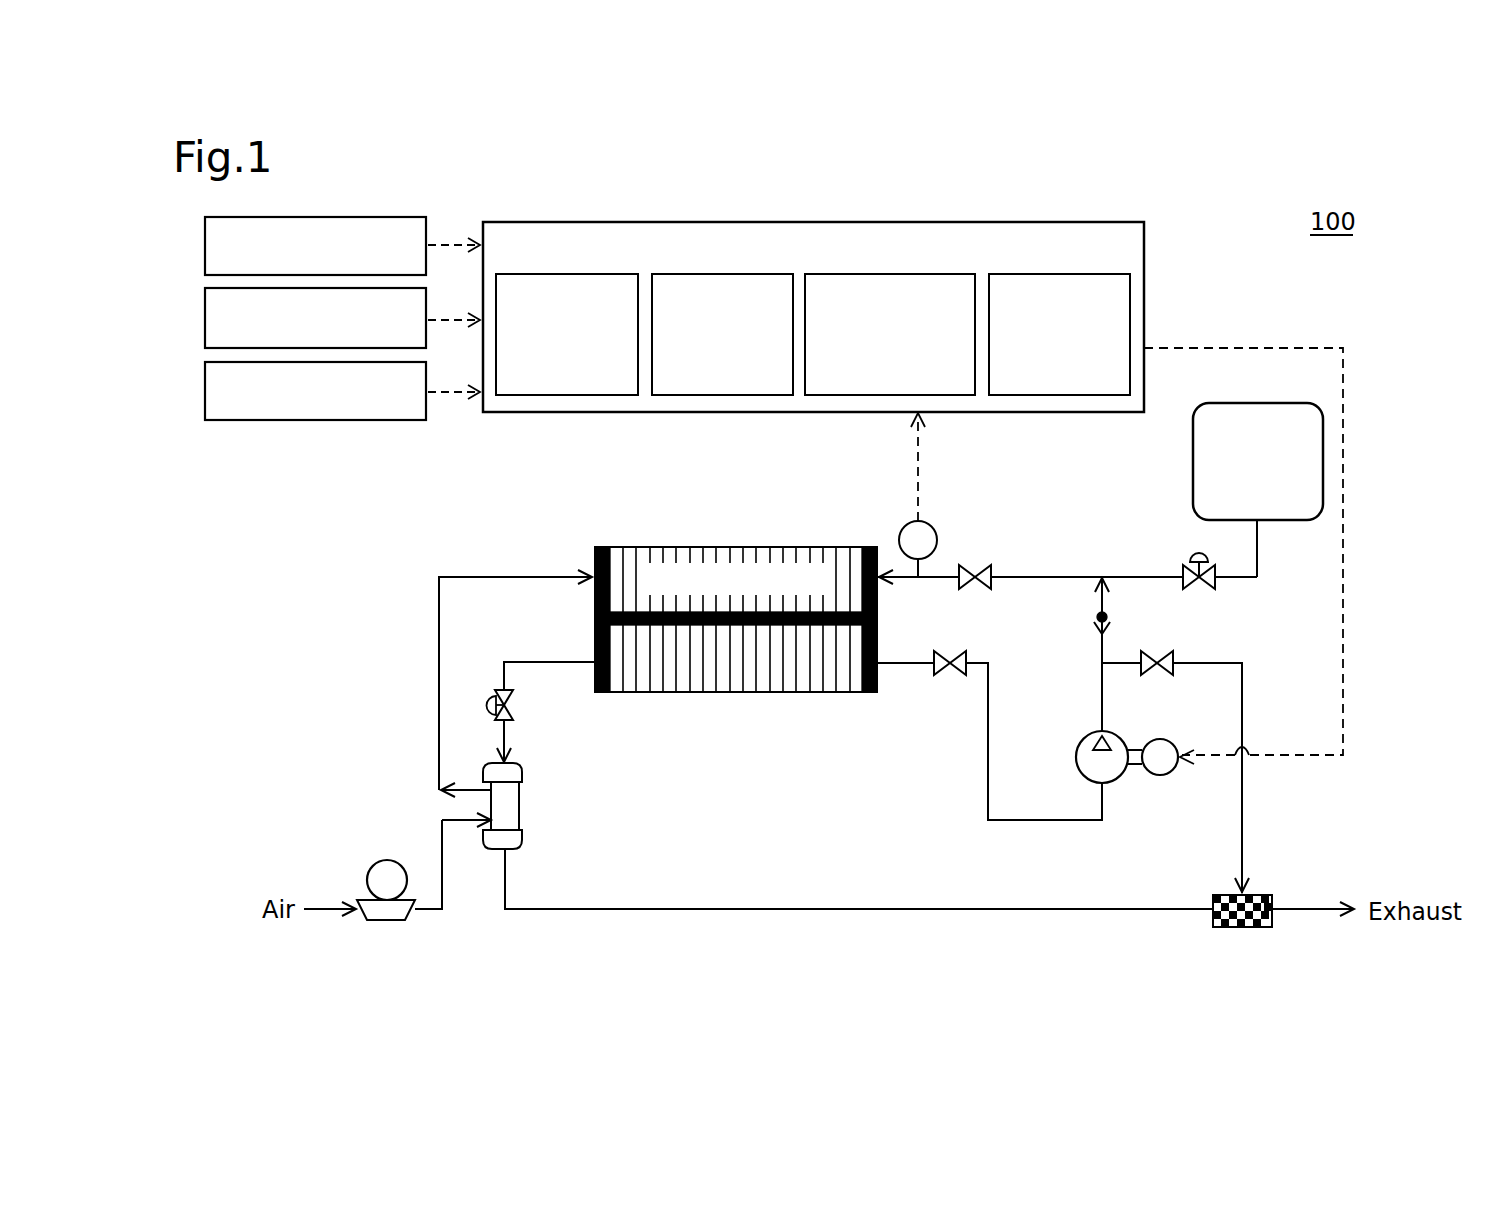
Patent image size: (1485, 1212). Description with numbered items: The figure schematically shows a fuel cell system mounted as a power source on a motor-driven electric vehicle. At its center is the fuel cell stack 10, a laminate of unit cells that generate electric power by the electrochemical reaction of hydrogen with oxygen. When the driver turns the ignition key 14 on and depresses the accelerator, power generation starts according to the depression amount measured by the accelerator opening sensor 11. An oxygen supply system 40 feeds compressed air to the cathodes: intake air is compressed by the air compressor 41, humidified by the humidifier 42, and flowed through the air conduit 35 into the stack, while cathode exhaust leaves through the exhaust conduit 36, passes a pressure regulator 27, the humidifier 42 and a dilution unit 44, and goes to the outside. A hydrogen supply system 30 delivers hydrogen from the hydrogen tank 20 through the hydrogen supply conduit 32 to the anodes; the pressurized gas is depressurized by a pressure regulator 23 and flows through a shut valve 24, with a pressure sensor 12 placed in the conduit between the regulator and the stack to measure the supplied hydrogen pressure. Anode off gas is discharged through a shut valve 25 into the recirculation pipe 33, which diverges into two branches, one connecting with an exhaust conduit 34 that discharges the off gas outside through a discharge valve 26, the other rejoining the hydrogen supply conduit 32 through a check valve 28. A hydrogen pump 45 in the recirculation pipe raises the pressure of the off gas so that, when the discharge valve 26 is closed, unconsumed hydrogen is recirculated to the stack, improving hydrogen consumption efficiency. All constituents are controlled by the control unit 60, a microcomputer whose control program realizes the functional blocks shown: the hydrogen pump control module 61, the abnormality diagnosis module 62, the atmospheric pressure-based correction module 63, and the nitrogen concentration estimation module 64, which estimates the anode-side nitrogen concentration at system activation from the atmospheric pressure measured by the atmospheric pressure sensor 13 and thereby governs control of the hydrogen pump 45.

The fuel cell stack 10 is at (730, 547).
The accelerator opening sensor 11 is at (205, 317).
The pressure sensor 12 is at (901, 527).
The atmospheric pressure sensor 13 is at (205, 389).
The ignition key 14 is at (205, 244).
The hydrogen tank 20 is at (1192, 448).
The pressure regulator 23 is at (1192, 556).
The shut valve 24 is at (967, 566).
The shut valve 25 is at (952, 676).
The discharge valve 26 is at (1156, 676).
The pressure regulator 27 is at (510, 710).
The check valve 28 is at (1094, 629).
The hydrogen supply system 30 is at (1244, 614).
The hydrogen supply conduit 32 is at (1045, 576).
The recirculation pipe 33 is at (986, 793).
The exhaust conduit 34 is at (1198, 662).
The air conduit 35 is at (524, 576).
The exhaust conduit 36 is at (540, 661).
The oxygen supply system 40 is at (407, 630).
The air compressor 41 is at (386, 921).
The humidifier 42 is at (519, 806).
The dilution unit 44 is at (1272, 900).
The hydrogen pump 45 is at (1090, 737).
The control unit 60 is at (1144, 266).
The hydrogen pump control module 61 is at (1058, 396).
The abnormality diagnosis module 62 is at (874, 396).
The atmospheric pressure-based correction module 63 is at (567, 396).
The nitrogen concentration estimation module 64 is at (720, 396).